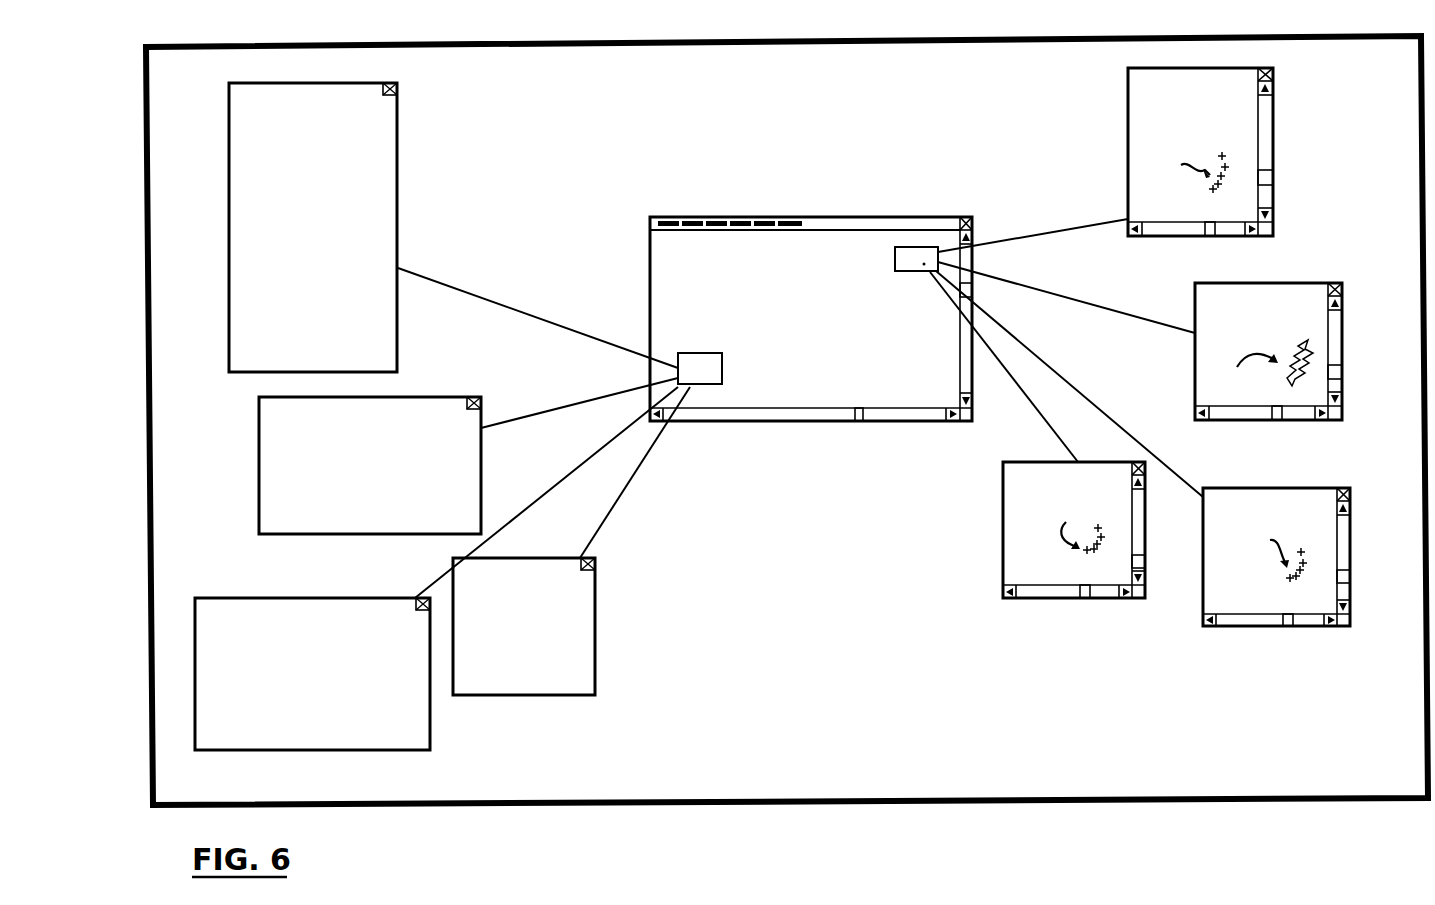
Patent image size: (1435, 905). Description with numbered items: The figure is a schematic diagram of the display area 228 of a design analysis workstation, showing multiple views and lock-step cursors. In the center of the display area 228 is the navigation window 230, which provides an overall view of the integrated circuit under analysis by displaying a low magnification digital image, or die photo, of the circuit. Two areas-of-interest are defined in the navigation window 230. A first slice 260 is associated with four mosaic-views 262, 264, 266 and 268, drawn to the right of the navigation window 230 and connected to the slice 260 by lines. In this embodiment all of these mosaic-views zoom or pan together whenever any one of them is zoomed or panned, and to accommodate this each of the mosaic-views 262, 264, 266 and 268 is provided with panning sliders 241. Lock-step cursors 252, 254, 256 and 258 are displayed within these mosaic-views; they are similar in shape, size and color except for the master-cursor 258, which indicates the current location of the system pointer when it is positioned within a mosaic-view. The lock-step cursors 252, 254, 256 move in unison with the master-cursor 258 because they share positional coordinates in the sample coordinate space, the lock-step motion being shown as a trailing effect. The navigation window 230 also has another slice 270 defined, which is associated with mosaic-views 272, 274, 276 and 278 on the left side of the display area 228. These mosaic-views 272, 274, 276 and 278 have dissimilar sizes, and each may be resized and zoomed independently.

The display area 228 is at (731, 778).
The navigation window 230 is at (777, 316).
The panning sliders 241 is at (858, 413).
The lock-step cursor 252 is at (1189, 161).
The lock-step cursor 254 is at (1265, 560).
The lock-step cursor 256 is at (1066, 525).
The master-cursor 258 is at (1264, 368).
The slice 260 is at (905, 253).
The mosaic-view 262 is at (1171, 152).
The mosaic-view 264 is at (1276, 538).
The mosaic-view 266 is at (1047, 530).
The mosaic-view 268 is at (1241, 340).
The slice 270 is at (710, 378).
The mosaic-view 272 is at (578, 683).
The mosaic-view 274 is at (418, 738).
The mosaic-view 276 is at (271, 506).
The mosaic-view 278 is at (372, 113).